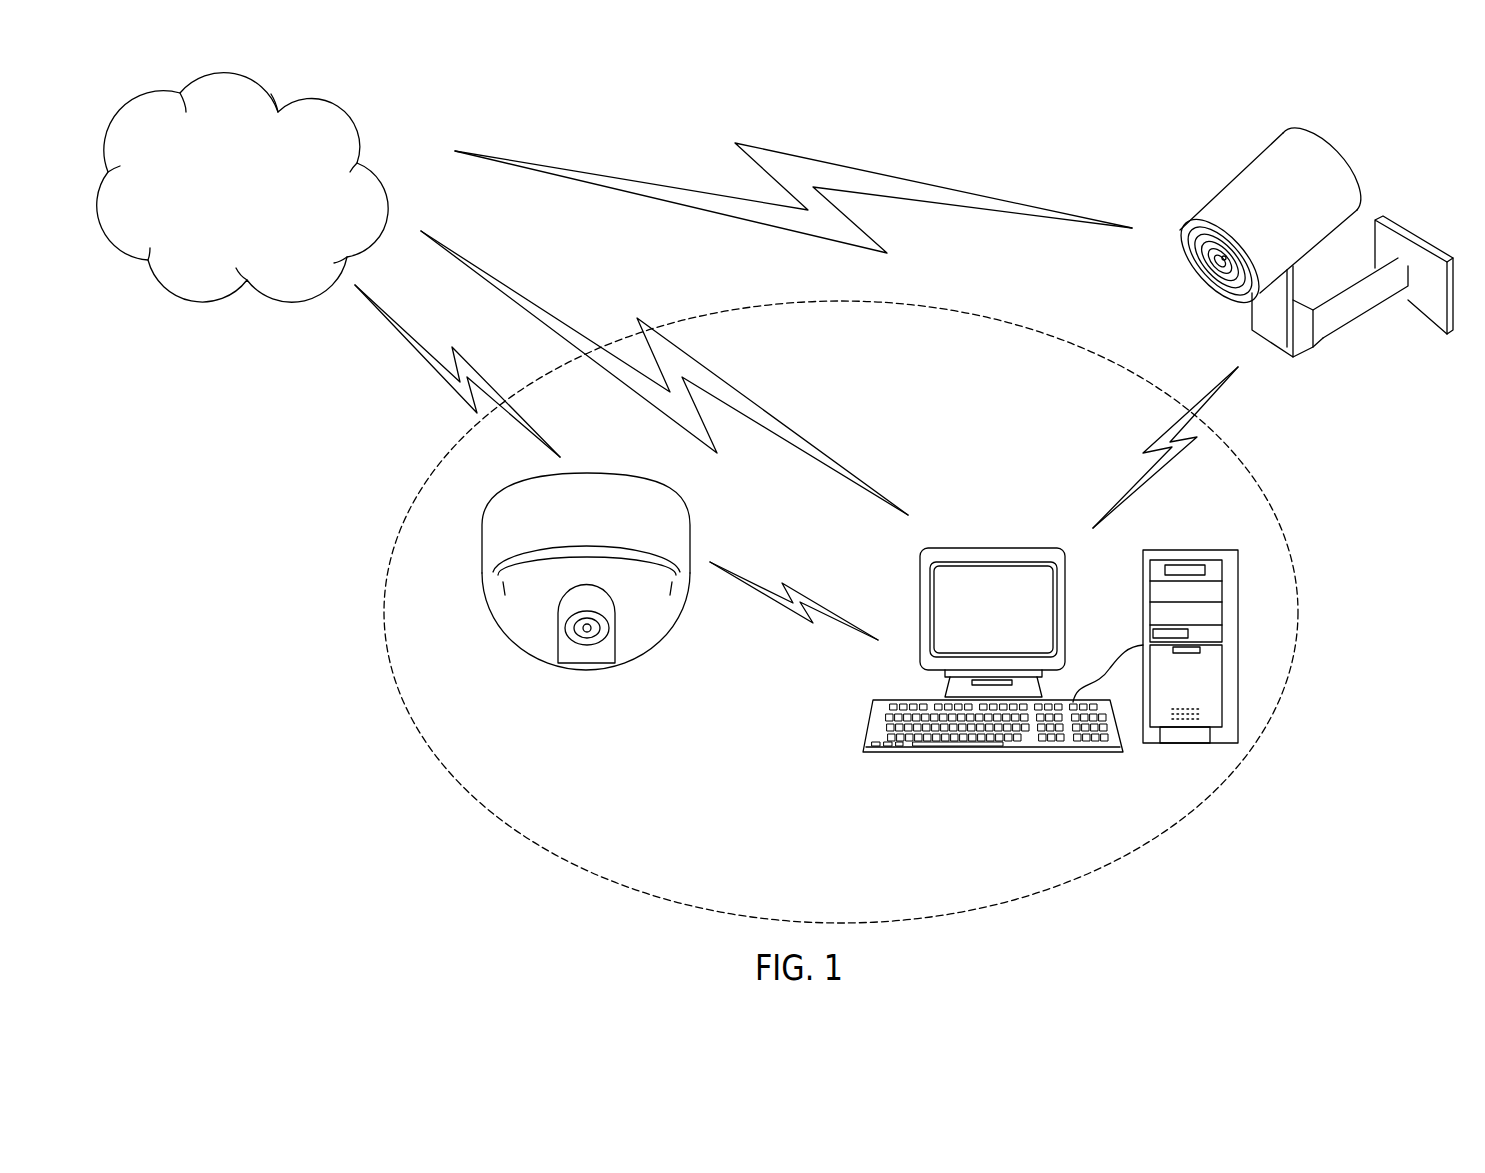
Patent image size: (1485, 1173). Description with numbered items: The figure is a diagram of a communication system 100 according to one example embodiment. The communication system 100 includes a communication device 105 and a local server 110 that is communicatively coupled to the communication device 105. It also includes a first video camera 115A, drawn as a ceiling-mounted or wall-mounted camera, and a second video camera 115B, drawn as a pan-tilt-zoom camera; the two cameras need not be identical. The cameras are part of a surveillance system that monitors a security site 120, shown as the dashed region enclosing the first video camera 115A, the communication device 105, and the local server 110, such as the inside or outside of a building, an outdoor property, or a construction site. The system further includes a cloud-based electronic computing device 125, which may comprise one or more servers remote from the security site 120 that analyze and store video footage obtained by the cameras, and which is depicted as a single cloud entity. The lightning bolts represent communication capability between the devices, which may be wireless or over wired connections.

The communication system 100 is at (1397, 125).
The communication device 105 is at (1050, 760).
The local server 110 is at (1237, 682).
The first video camera 115A is at (502, 543).
The second video camera 115B is at (1235, 197).
The security site 120 is at (490, 808).
The cloud-based electronic computing device 125 is at (345, 102).